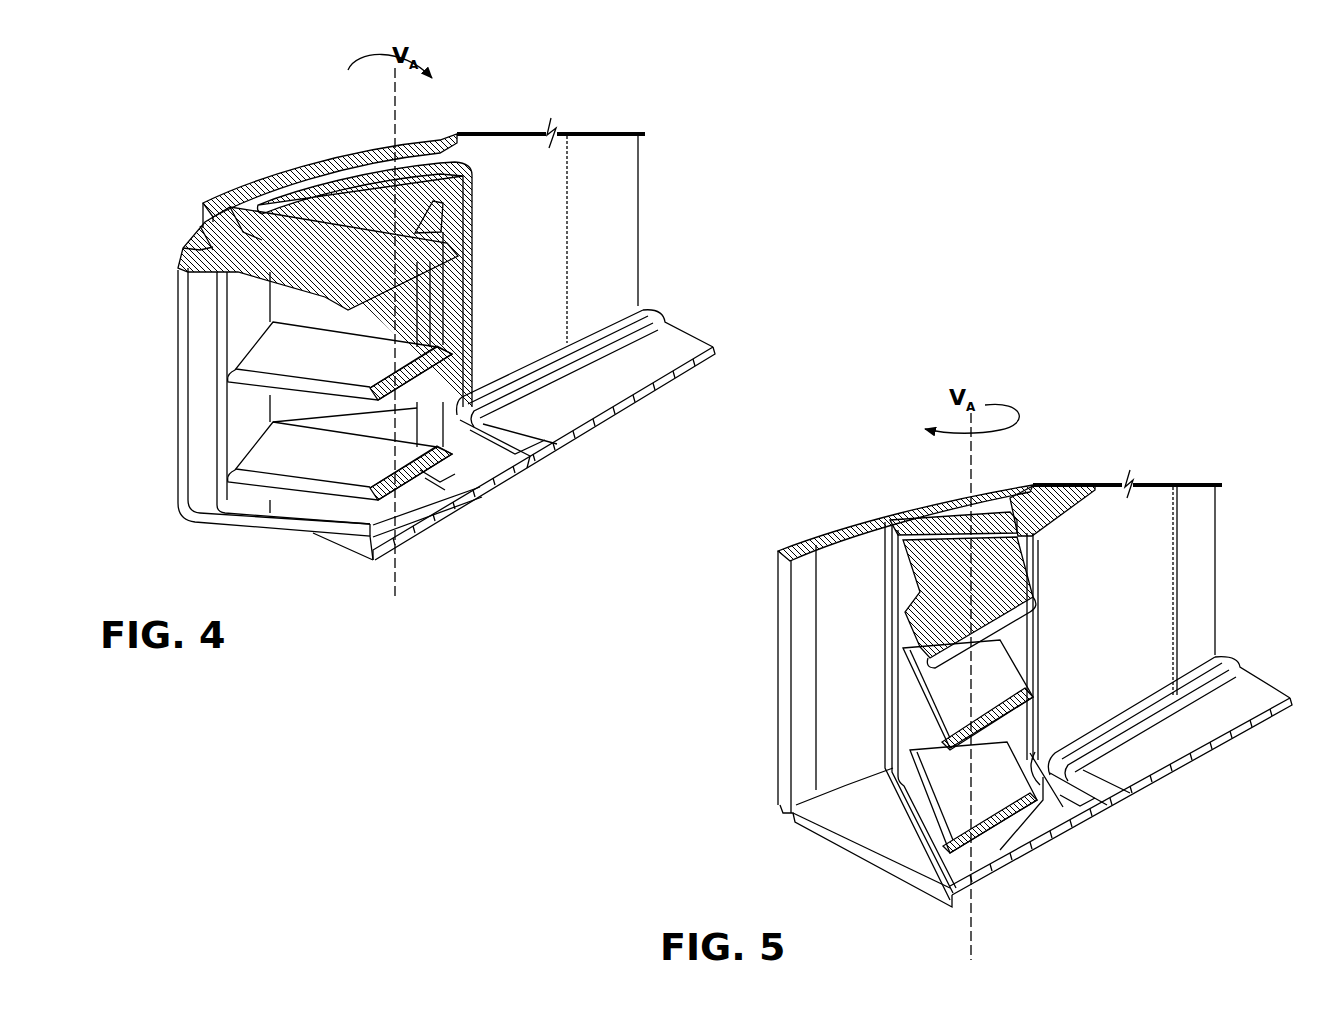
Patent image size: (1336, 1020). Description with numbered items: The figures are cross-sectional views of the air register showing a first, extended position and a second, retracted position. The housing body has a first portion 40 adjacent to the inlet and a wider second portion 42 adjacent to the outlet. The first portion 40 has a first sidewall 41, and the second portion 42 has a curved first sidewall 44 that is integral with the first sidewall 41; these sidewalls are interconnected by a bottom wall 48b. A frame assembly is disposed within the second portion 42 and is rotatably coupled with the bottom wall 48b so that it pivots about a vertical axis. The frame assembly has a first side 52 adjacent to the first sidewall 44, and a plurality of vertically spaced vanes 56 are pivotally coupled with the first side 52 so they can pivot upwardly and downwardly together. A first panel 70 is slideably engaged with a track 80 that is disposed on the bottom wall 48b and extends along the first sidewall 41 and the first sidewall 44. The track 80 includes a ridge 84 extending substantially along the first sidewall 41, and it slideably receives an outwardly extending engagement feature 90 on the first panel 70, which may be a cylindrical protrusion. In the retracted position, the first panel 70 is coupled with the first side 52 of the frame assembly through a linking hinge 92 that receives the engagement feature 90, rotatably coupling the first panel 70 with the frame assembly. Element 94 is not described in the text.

In FIG. 4, the first portion 40 is at (565, 127).
In FIG. 5, the first portion 40 is at (1107, 466).
In FIG. 4, the first sidewall 41 is at (600, 182).
In FIG. 5, the first sidewall 41 is at (1187, 503).
In FIG. 4, the second portion 42 is at (217, 186).
In FIG. 5, the second portion 42 is at (800, 529).
In FIG. 4, the first sidewall 44 is at (292, 183).
In FIG. 5, the first sidewall 44 is at (845, 552).
In FIG. 4, the bottom wall 48b is at (477, 465).
In FIG. 5, the bottom wall 48b is at (1068, 808).
In FIG. 4, the first side 52 is at (181, 247).
In FIG. 5, the first side 52 is at (937, 502).
In FIG. 4, the vanes 56 is at (270, 357).
In FIG. 5, the vanes 56 is at (954, 690).
In FIG. 4, the first panel 70 is at (425, 187).
In FIG. 5, the first panel 70 is at (1128, 517).
In FIG. 4, the track 80 is at (664, 304).
In FIG. 5, the track 80 is at (1232, 652).
In FIG. 4, the ridge 84 is at (633, 334).
In FIG. 5, the ridge 84 is at (1205, 677).
In FIG. 4, the outwardly extending engagement feature 90 is at (557, 437).
In FIG. 5, the outwardly extending engagement feature 90 is at (1162, 690).
In FIG. 5, the linking hinge 92 is at (1043, 777).
In FIG. 5, the guide 94 is at (1050, 780).